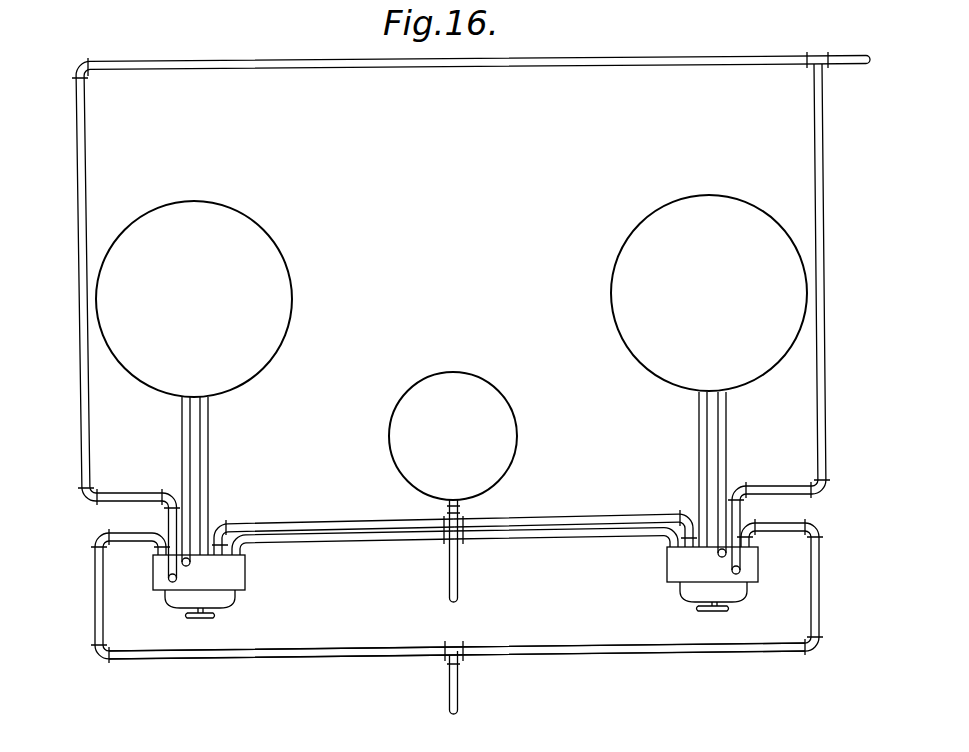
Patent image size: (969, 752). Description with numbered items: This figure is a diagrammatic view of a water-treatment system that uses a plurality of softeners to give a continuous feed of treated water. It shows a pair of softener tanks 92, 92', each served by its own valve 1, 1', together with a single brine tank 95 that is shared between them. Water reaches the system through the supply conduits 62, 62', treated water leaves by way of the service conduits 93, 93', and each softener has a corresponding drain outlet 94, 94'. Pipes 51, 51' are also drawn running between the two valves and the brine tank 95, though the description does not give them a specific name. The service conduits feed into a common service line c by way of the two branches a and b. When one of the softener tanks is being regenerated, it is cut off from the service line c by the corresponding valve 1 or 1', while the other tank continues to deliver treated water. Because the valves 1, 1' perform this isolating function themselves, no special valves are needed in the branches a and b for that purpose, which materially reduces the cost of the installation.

The valve 1 is at (700, 579).
The valve 1' is at (204, 588).
The pipe 51 is at (575, 518).
The pipe 51' is at (333, 526).
The supply conduit 62 is at (795, 319).
The supply conduit 62' is at (449, 317).
The softener tank 92 is at (709, 376).
The softener tank 92' is at (194, 383).
The service conduit 93 is at (654, 587).
The service conduit 93' is at (248, 596).
The drain outlet 94 is at (566, 548).
The drain outlet 94' is at (343, 554).
The brine tank 95 is at (453, 487).
The branch a is at (300, 651).
The branch b is at (545, 648).
The service line c is at (459, 688).